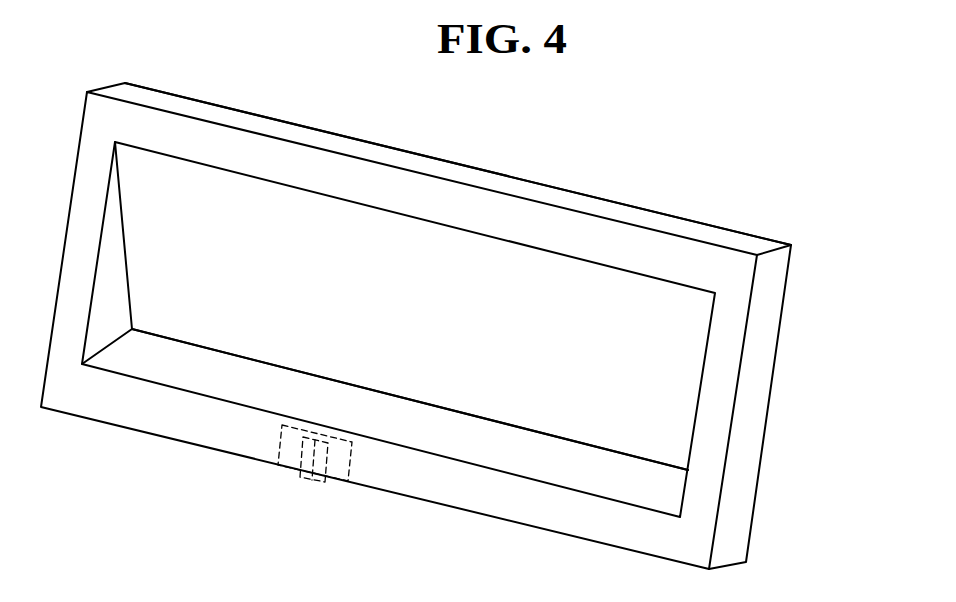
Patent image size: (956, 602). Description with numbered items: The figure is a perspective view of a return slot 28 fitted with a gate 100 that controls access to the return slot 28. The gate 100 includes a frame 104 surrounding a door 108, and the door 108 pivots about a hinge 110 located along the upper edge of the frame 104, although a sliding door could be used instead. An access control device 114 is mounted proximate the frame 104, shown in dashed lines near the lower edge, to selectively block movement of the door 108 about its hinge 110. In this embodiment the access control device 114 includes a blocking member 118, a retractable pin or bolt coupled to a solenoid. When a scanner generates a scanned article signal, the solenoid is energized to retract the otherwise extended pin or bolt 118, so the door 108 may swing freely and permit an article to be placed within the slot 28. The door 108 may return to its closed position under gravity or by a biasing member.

The gate 100 is at (667, 188).
The frame 104 is at (260, 127).
The hinge 110 is at (260, 177).
The door 108 is at (418, 314).
The return slot 28 is at (572, 457).
The access control device 114 is at (278, 443).
The blocking member 118 is at (303, 477).